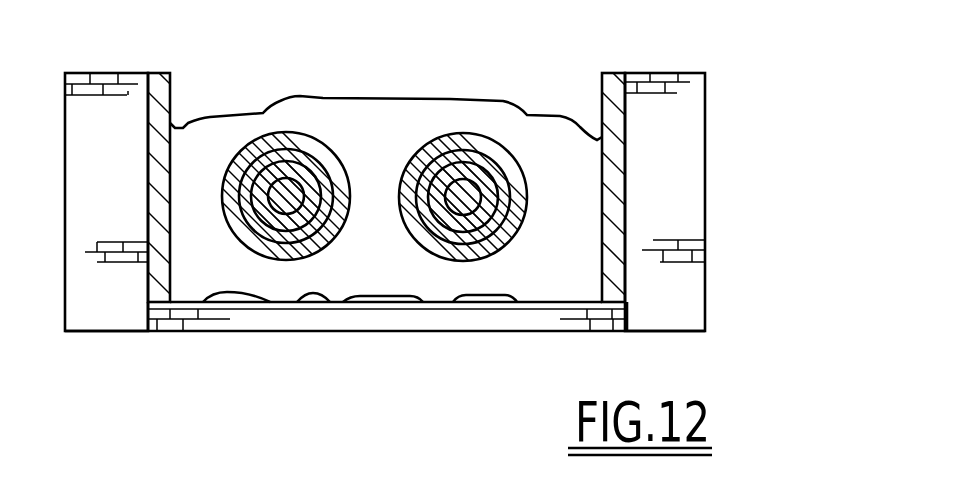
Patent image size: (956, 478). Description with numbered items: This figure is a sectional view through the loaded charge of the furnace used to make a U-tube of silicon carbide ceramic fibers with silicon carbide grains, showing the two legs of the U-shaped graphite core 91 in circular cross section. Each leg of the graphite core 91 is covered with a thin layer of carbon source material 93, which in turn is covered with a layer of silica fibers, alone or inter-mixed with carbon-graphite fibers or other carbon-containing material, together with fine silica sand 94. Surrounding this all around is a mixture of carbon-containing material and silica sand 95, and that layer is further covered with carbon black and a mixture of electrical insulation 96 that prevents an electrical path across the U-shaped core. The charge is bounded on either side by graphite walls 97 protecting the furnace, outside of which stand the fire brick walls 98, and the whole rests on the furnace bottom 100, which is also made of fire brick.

The graphite core 91 is at (273, 208).
The carbon source material 93 is at (298, 172).
The layer of silica fibers 94 is at (270, 155).
The mixture of carbon-containing material and silica sand 95 is at (232, 160).
The mixture of electrical insulation 96 is at (434, 124).
The graphite walls 97 is at (613, 80).
The fire brick wall 98 is at (692, 148).
The furnace bottom 100 is at (527, 317).